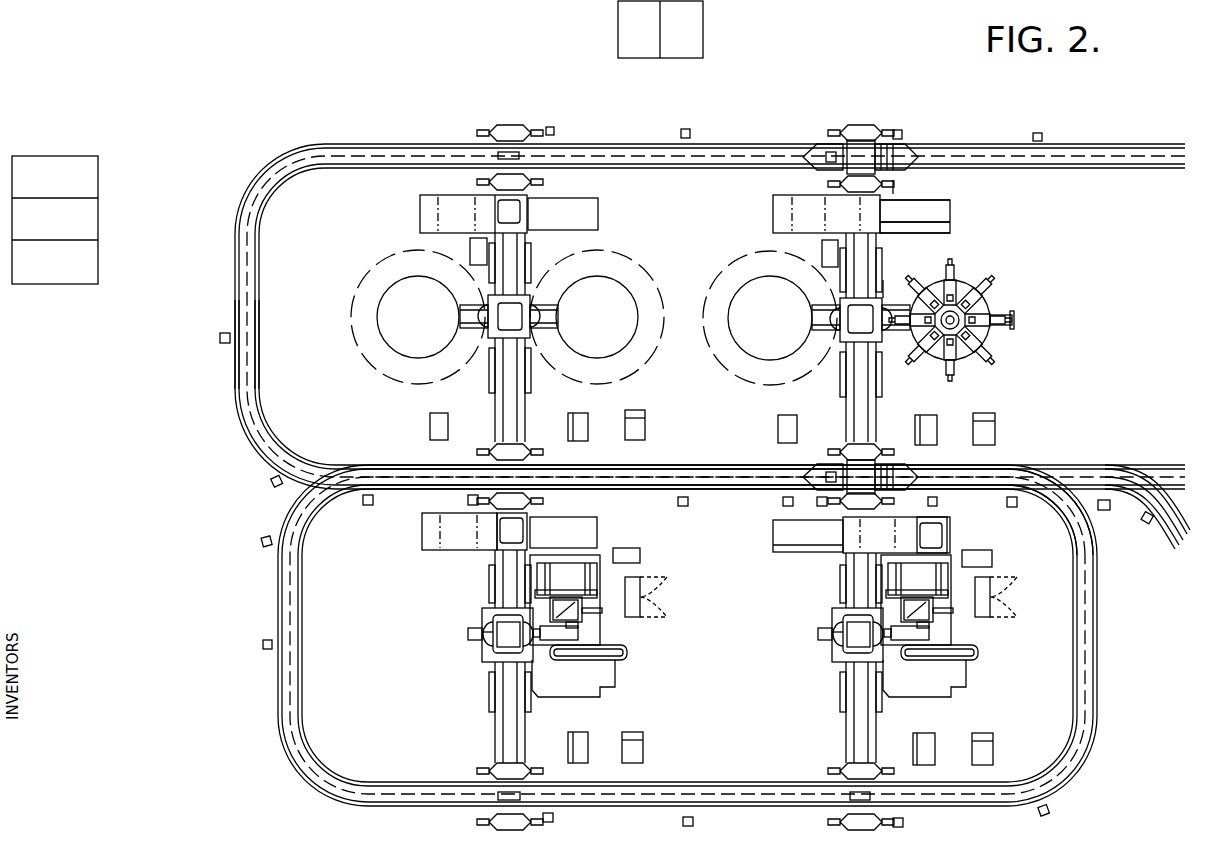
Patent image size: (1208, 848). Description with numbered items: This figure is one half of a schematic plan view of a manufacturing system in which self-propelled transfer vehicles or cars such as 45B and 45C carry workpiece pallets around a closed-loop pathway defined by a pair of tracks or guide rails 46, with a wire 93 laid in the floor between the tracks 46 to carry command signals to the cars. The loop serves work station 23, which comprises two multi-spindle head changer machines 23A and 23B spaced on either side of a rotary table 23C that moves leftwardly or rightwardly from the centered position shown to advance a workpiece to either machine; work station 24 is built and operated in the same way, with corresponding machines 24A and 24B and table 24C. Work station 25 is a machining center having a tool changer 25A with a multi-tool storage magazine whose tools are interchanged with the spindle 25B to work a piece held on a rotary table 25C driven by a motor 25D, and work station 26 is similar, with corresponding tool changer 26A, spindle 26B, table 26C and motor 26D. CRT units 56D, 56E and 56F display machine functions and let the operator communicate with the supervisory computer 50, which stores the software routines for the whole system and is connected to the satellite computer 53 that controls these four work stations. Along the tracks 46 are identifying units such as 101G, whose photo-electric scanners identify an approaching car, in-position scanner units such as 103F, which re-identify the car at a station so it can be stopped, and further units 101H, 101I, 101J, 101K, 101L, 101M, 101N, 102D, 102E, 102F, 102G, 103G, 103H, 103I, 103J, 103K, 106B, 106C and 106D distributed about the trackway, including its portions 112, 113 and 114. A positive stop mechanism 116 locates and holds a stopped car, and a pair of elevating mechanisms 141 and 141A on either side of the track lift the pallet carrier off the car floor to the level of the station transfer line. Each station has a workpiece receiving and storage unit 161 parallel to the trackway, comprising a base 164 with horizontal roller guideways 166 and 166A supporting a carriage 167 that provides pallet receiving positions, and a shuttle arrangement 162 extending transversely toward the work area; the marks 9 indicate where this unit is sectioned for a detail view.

The pallet 9 is at (896, 187).
The work station 23 is at (878, 313).
The multi-spindle head changer machine 23A is at (992, 340).
The multi-spindle head changer machine 23B is at (737, 381).
The rotary table 23C is at (857, 348).
The work station 24 is at (517, 292).
The rotary table 24A is at (661, 288).
The rotary table 24B is at (359, 356).
The transfer unit 24C is at (505, 348).
The work station 25 is at (543, 661).
The tool changer 25A is at (628, 657).
The spindle 25B is at (566, 637).
The rotary table 25C is at (490, 629).
The motor 25D is at (475, 641).
The work station 26 is at (893, 673).
The slide 26A is at (979, 657).
The work head 26B is at (917, 637).
The transfer unit 26C is at (840, 629).
The sensor 26D is at (825, 641).
The workpiece transfer vehicle 45B is at (828, 463).
The workpiece transfer vehicle 45C is at (827, 151).
The tracks 46 is at (688, 316).
The supervisory computer 50 is at (70, 153).
The satellite computer 53 is at (707, 40).
The CRT unit 56D is at (995, 435).
The CRT unit 56E is at (645, 426).
The CRT unit 56F is at (643, 748).
The wire 93 is at (248, 391).
The identifying unit 101G is at (1042, 135).
The position sensor 101H is at (690, 130).
The position sensor 101I is at (272, 485).
The position sensor 101J is at (678, 502).
The position sensor 101K is at (1050, 809).
The position sensor 101L is at (693, 822).
The position sensor 101M is at (262, 542).
The position sensor 101N is at (1148, 524).
The stop sensor 102D is at (220, 338).
The stop sensor 102E is at (783, 502).
The stop sensor 102F is at (937, 503).
The stop sensor 102G is at (263, 645).
The in position scanner unit 103F is at (902, 132).
The station sensor 103G is at (554, 129).
The station sensor 103H is at (468, 500).
The station sensor 103I is at (813, 505).
The station sensor 103J is at (903, 823).
The station sensor 103K is at (553, 818).
The switch sensor 106B is at (373, 505).
The switch sensor 106C is at (1010, 508).
The switch sensor 106D is at (1103, 512).
The track loop 112 is at (347, 502).
The track section 113 is at (1027, 506).
The track branch 114 is at (1124, 506).
The positive stop mechanism 116 is at (511, 159).
The elevating mechanism 141 is at (845, 142).
The elevating mechanism 141A is at (842, 183).
The workpiece receiving and storage unit 161 is at (959, 219).
The shuttle arrangement 162 is at (881, 272).
The base 164 is at (950, 223).
The roller guideway 166 is at (950, 234).
The roller guideway 166A is at (950, 201).
The carriage 167 is at (778, 207).